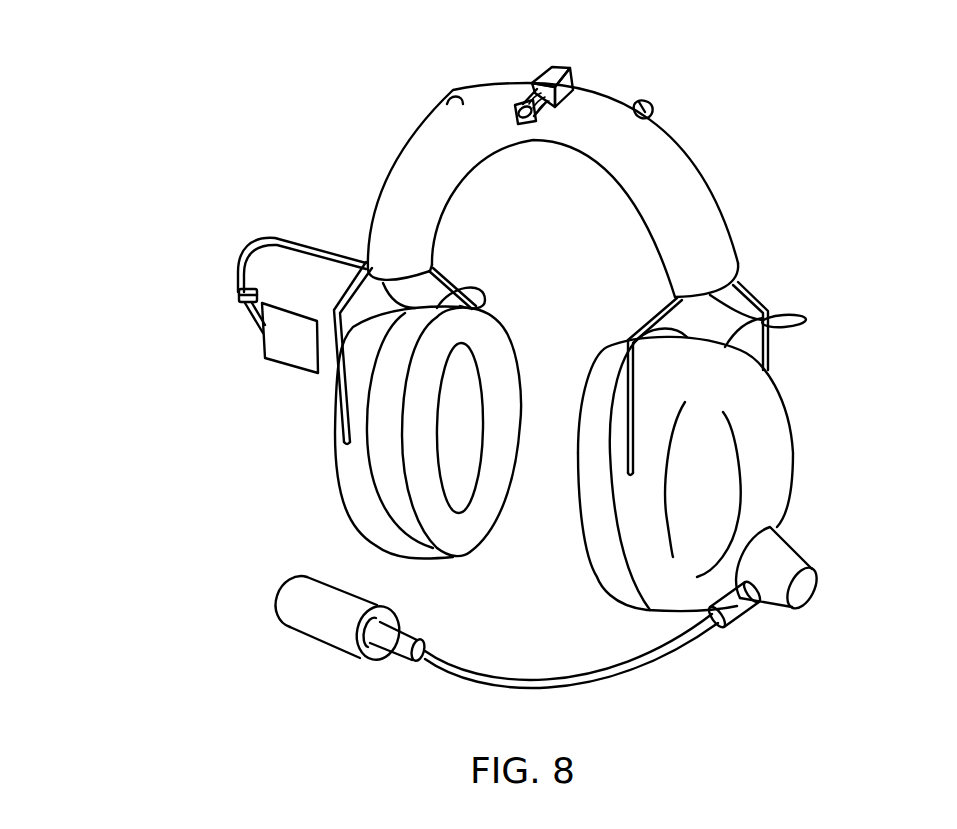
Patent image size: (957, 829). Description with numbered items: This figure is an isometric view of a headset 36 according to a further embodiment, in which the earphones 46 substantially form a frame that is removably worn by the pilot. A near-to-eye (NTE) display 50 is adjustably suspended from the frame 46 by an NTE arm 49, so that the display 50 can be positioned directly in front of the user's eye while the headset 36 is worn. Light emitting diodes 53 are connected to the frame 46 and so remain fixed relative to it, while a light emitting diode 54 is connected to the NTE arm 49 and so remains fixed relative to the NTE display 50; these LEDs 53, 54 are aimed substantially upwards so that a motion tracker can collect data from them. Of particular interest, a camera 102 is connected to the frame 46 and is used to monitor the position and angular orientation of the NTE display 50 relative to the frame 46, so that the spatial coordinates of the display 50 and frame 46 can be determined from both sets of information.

The headset 36 is at (216, 142).
The earphones 46 is at (790, 450).
The NTE arm 49 is at (236, 268).
The NTE display 50 is at (262, 354).
The LEDs 53 is at (455, 98).
The LEDs 54 is at (251, 290).
The camera 102 is at (562, 67).